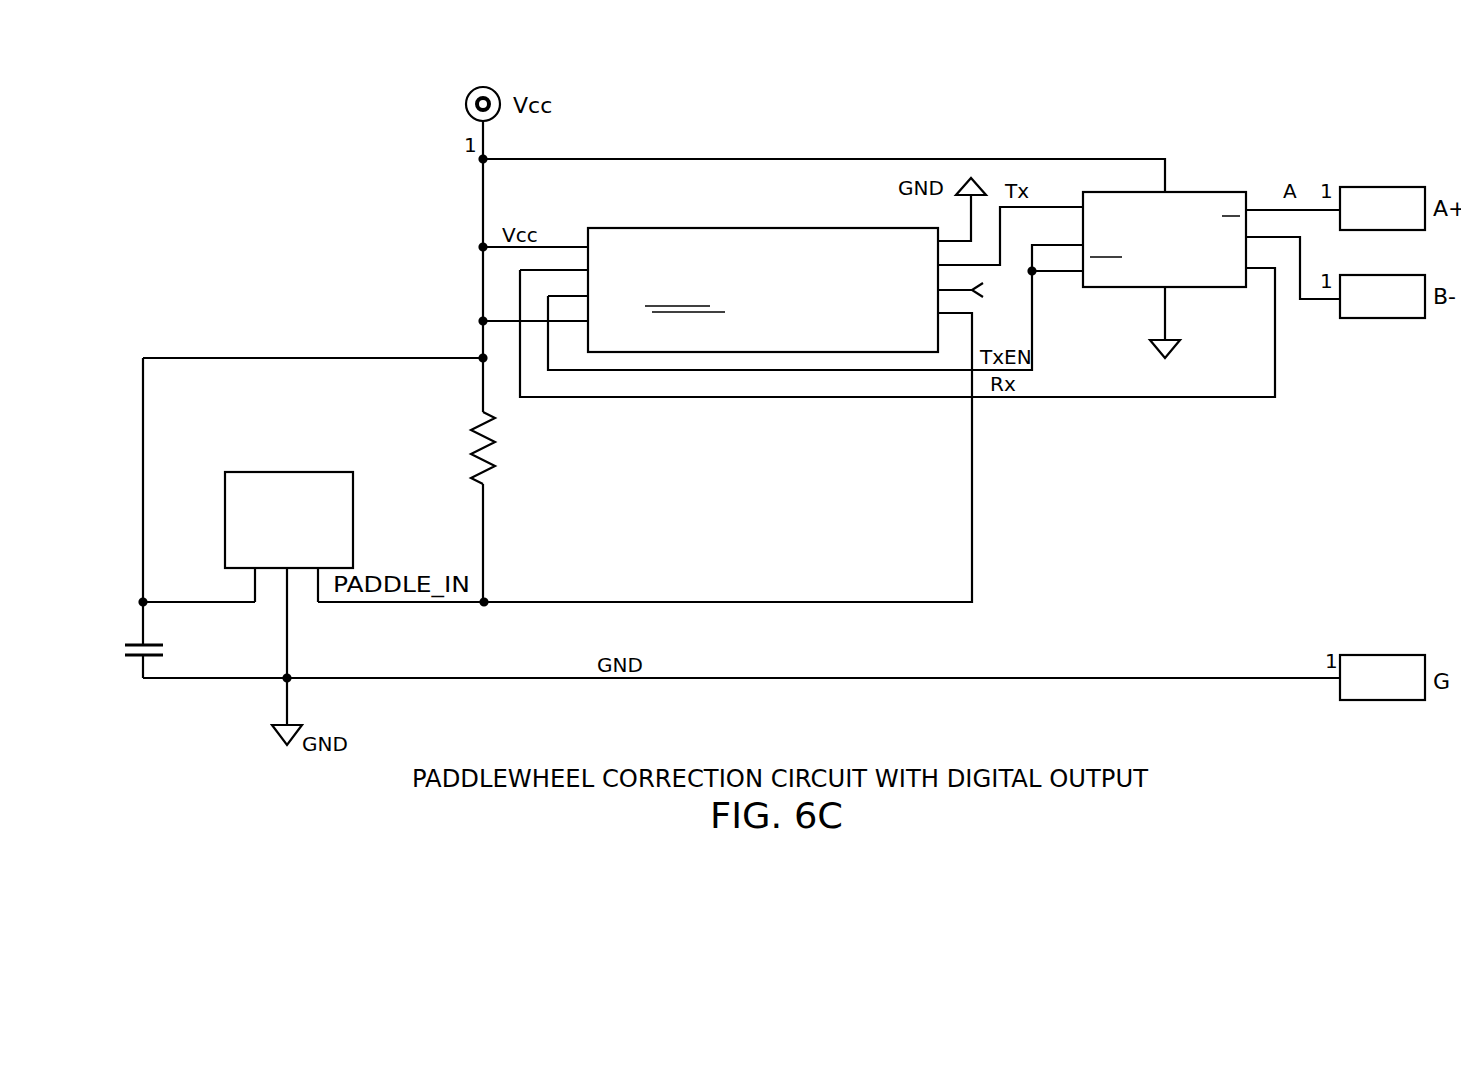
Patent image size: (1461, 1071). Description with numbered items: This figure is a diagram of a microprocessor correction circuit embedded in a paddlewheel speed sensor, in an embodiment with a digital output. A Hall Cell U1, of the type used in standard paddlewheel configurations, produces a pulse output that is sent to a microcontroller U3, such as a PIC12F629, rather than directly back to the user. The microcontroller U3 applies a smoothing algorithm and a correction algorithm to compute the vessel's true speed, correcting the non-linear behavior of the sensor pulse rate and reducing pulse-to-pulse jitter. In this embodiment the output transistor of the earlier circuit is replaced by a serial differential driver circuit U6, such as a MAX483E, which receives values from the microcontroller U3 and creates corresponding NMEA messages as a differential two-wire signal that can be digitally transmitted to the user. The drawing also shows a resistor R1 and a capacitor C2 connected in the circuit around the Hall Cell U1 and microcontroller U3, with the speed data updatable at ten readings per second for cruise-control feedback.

The Hall Cell U1 is at (289, 559).
The microcontroller U3 is at (760, 274).
The RS-485 driver circuit U6 is at (1155, 265).
The resistor R1 is at (501, 454).
The capacitor C2 is at (163, 657).